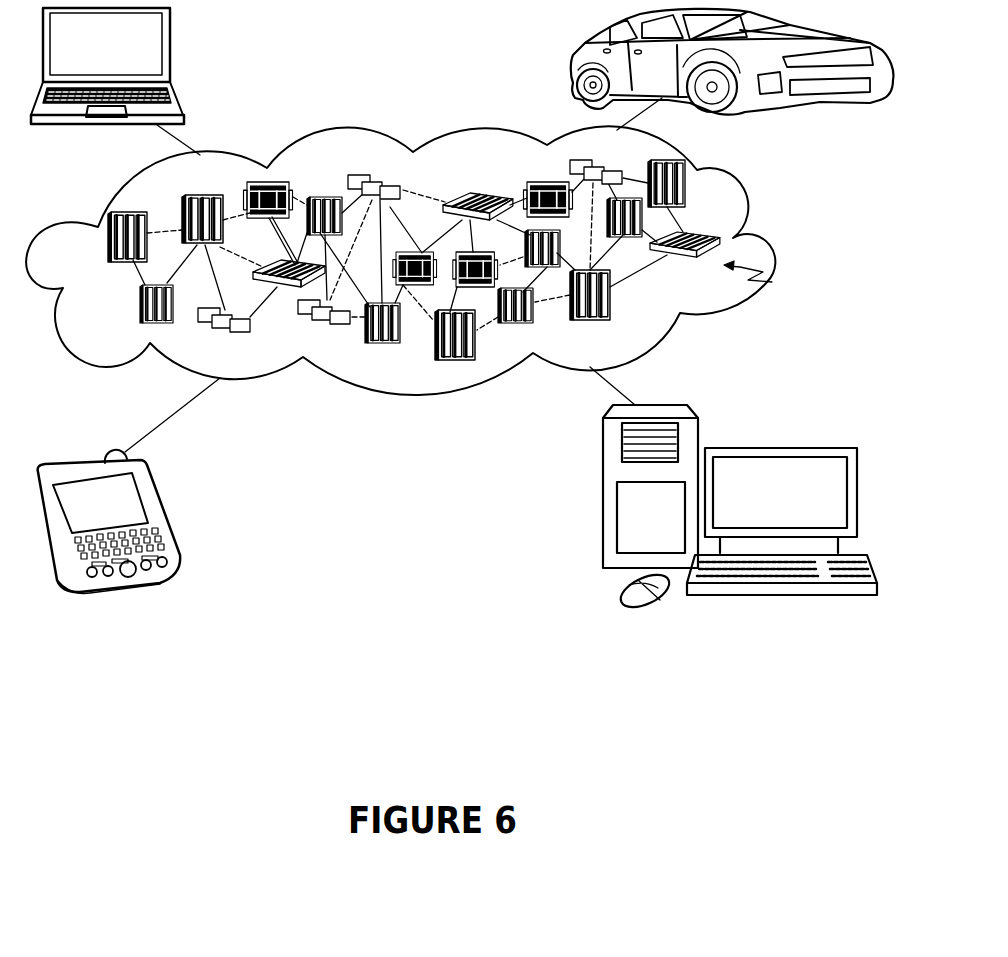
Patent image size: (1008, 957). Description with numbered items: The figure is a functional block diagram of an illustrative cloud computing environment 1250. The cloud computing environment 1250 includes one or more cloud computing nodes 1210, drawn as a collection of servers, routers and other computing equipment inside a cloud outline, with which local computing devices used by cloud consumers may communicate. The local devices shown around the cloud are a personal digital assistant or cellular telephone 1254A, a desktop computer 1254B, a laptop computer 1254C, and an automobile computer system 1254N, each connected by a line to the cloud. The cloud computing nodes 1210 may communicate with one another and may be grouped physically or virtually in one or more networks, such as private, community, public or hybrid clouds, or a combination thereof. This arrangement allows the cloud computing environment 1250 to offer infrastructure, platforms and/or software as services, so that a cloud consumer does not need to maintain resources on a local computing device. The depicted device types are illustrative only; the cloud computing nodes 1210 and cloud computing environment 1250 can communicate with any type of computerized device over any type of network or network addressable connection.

The cloud computing environment 1250 is at (778, 243).
The cloud computing nodes 1210 is at (772, 282).
The personal digital assistant (PDA) or cellular telephone 1254A is at (163, 513).
The desktop computer 1254B is at (788, 428).
The laptop computer 1254C is at (172, 52).
The automobile computer system 1254N is at (577, 62).